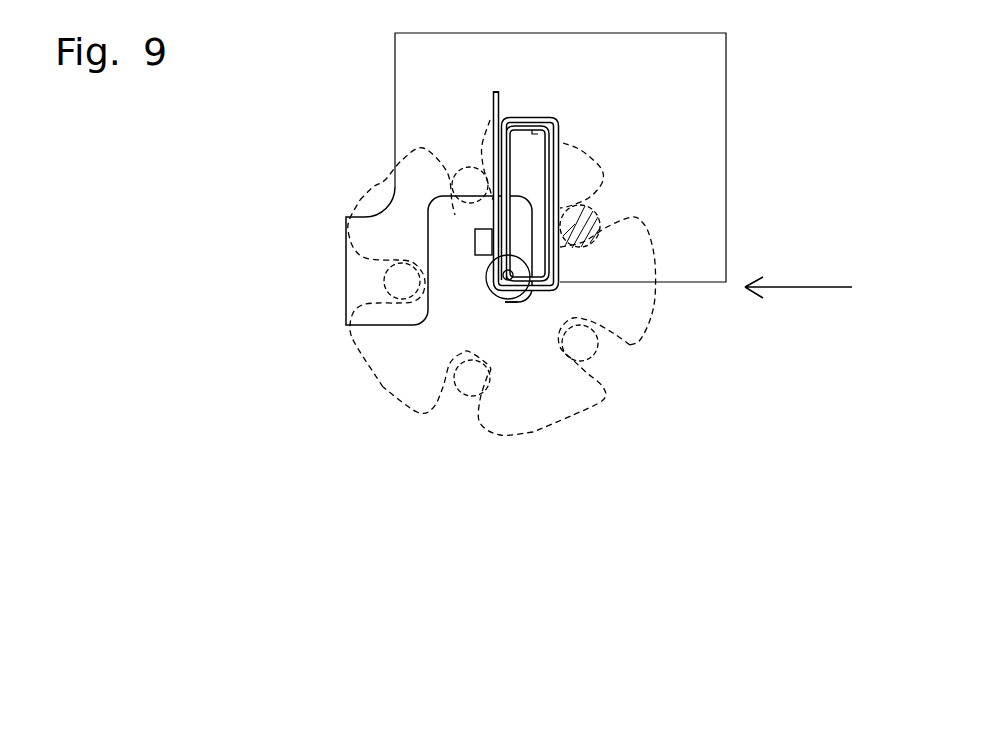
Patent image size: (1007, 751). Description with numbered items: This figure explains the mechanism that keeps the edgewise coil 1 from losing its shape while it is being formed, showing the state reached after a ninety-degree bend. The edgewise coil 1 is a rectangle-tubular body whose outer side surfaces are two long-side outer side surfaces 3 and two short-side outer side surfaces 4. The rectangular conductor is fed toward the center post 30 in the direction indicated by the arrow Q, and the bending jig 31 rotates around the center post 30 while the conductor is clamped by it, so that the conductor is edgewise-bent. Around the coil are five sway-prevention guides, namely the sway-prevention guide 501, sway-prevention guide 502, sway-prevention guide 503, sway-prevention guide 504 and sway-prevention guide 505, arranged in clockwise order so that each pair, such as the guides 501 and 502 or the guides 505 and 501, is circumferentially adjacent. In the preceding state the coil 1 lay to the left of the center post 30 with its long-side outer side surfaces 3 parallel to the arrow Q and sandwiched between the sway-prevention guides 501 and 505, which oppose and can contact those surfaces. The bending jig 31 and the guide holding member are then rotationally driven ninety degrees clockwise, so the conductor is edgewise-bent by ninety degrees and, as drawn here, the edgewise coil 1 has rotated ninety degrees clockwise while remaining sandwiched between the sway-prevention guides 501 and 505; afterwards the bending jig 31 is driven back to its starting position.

The edgewise coil 1 is at (516, 203).
The long-side outer side surface 3 is at (562, 167).
The short-side outer side surface 4 is at (532, 300).
The center post 30 is at (511, 300).
The bending jig 31 is at (477, 240).
The sway-prevention guide 501 is at (602, 230).
The sway-prevention guide 502 is at (587, 362).
The sway-prevention guide 503 is at (458, 410).
The sway-prevention guide 504 is at (385, 283).
The sway-prevention guide 505 is at (462, 168).
The arrow Q is at (800, 285).